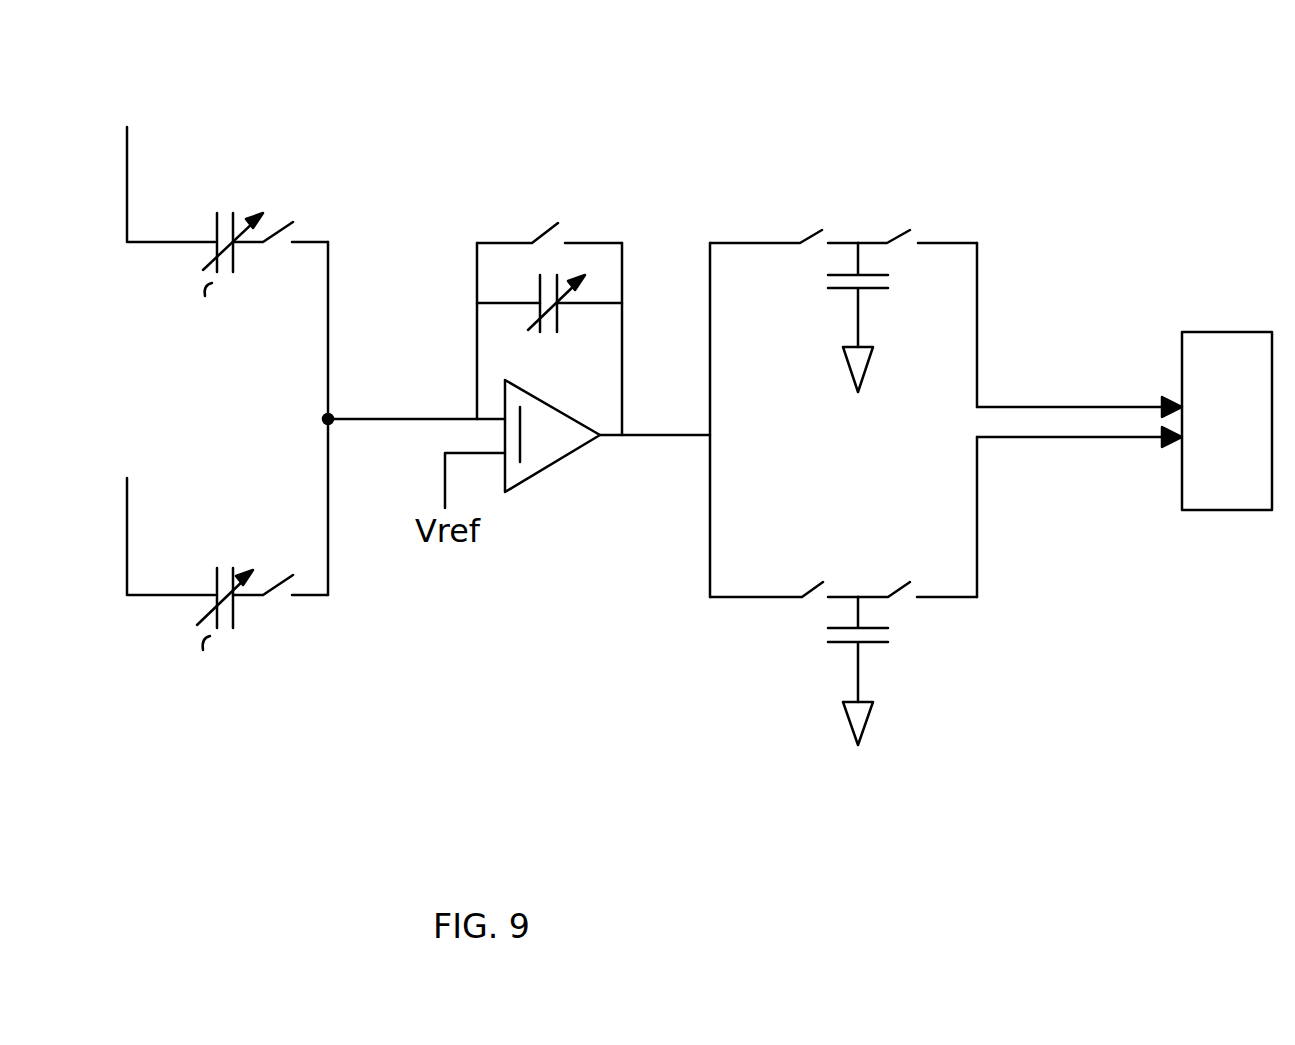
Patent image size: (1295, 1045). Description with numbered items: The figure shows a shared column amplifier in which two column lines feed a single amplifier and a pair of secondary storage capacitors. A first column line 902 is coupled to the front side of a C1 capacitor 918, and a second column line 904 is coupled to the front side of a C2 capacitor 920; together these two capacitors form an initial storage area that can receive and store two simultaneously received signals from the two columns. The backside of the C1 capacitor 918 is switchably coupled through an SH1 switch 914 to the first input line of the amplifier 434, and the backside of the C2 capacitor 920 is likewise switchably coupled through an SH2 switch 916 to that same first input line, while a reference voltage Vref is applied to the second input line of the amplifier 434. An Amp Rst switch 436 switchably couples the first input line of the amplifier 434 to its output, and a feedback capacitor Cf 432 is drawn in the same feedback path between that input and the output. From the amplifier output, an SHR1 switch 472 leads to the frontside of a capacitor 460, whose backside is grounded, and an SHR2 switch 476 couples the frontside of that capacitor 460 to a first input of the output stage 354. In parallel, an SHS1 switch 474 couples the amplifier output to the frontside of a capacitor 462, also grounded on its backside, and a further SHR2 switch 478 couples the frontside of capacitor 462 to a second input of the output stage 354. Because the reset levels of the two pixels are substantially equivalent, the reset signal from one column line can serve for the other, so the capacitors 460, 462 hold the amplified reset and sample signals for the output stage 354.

The first column line 902 is at (127, 155).
The second column line 904 is at (127, 493).
The SH1 switch 914 is at (303, 228).
The SH2 switch 916 is at (300, 580).
The C1 capacitor 918 is at (243, 272).
The C2 capacitor 920 is at (243, 629).
The variable feedback capacitor Cf 432 is at (548, 338).
The amplifier 434 is at (607, 436).
The Amp Rst switch 436 is at (578, 228).
The SHR1 switch 472 is at (828, 232).
The SHR2 switch 476 is at (918, 232).
The capacitor 460 is at (870, 288).
The SHS1 switch 474 is at (862, 555).
The SHR2 switch 478 is at (903, 598).
The capacitor 462 is at (882, 657).
The output stage 354 is at (1124, 421).